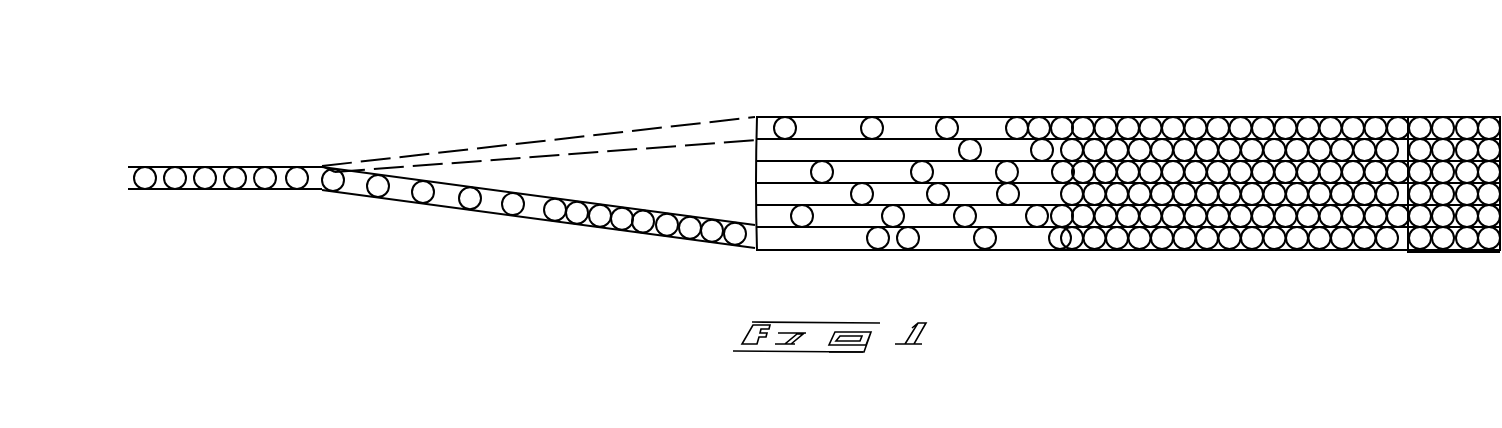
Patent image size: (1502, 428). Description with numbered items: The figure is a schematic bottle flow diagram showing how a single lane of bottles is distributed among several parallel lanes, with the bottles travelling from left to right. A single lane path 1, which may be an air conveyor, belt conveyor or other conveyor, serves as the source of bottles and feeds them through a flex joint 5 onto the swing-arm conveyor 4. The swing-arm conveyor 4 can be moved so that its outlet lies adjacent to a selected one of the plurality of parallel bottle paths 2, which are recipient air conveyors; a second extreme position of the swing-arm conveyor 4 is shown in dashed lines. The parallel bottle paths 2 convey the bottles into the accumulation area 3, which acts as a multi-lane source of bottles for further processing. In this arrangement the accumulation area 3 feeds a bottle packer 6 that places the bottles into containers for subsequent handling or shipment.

The single lane path 1 is at (192, 190).
The parallel bottle paths 2 is at (895, 173).
The accumulation area 3 is at (1208, 115).
The swing-arm conveyor 4 is at (600, 145).
The flex joint 5 is at (325, 150).
The bottle packer 6 is at (1452, 262).